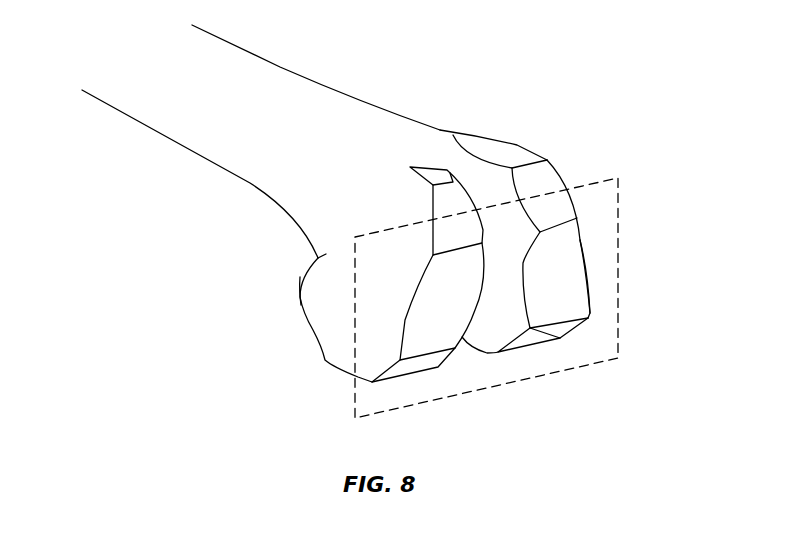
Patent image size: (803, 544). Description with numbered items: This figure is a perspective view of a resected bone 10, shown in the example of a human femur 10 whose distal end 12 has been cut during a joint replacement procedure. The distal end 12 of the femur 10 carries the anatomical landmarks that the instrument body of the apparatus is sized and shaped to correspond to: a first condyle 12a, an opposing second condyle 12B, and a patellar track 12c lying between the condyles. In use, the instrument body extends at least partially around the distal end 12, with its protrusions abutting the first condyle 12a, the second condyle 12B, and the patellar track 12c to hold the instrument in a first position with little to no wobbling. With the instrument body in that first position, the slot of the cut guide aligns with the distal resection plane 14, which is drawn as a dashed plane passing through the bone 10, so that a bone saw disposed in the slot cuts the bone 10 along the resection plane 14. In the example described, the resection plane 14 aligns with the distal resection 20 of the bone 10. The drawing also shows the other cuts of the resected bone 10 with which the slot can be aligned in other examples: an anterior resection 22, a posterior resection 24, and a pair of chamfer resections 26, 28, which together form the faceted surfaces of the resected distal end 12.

The bone 10 is at (303, 93).
The distal end 12 is at (322, 318).
The second condyle 12B is at (310, 295).
The patellar track 12c is at (437, 153).
The anterior resection 22 is at (507, 150).
The chamfer resection 26 is at (548, 182).
The distal resection 20 is at (568, 270).
The first condyle 12a is at (592, 285).
The chamfer resection 28 is at (545, 337).
The posterior resection 24 is at (488, 353).
The distal resection plane 14 is at (622, 228).